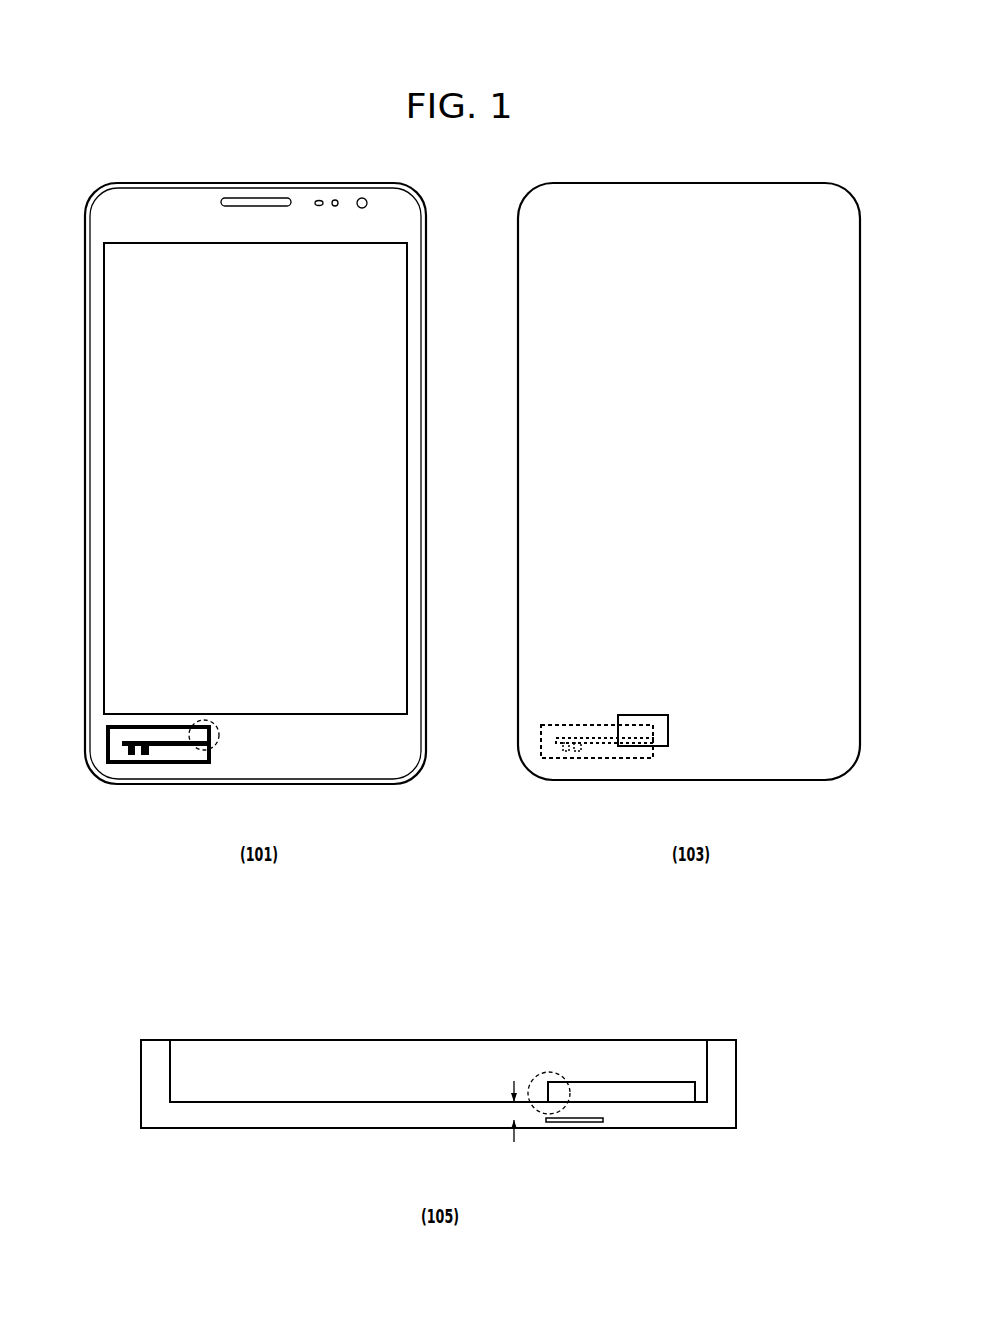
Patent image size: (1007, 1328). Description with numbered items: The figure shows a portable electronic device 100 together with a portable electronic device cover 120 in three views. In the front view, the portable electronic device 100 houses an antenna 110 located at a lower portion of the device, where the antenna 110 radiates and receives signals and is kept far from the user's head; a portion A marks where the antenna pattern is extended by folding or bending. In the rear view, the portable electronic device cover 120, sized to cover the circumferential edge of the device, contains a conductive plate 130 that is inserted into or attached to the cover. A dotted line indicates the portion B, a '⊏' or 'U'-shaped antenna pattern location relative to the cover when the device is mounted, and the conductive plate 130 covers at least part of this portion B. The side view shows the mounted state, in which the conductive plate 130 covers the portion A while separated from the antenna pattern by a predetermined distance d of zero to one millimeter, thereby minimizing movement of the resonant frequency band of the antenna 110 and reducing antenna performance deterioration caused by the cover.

The portable electronic device 100 is at (102, 225).
The antenna 110 is at (99, 740).
The portable electronic device cover 120 is at (683, 175).
The conductive plate 130 is at (643, 740).
The portion A is at (208, 740).
The portion B is at (543, 750).
The predetermined distance d is at (509, 1106).